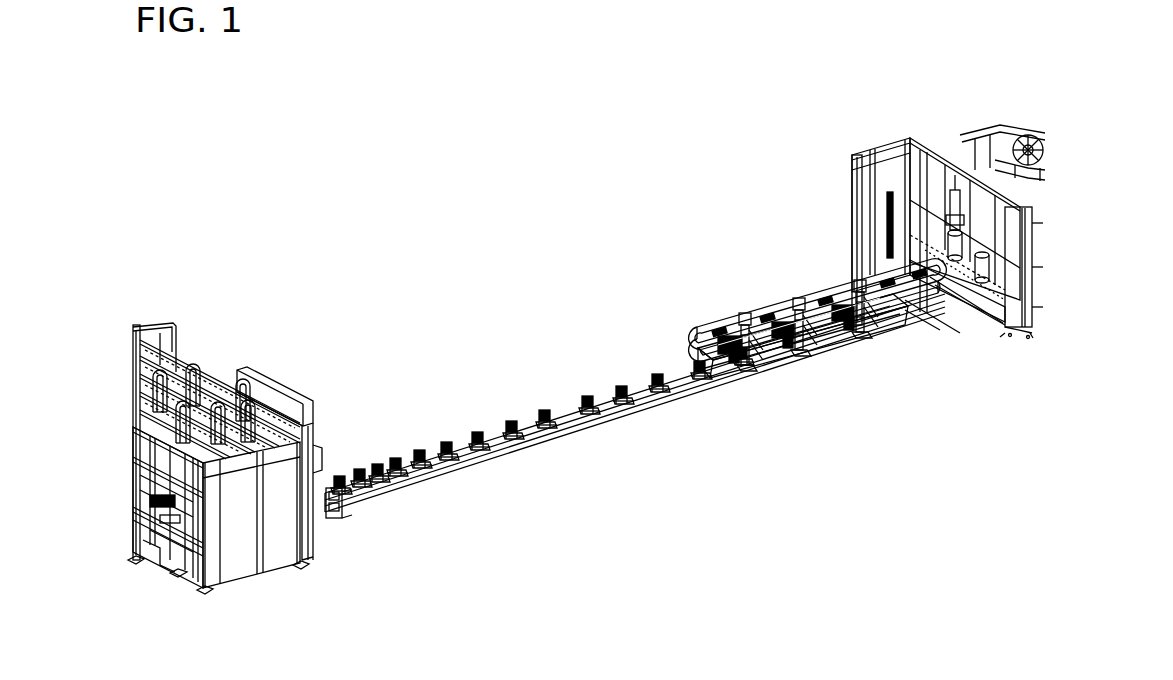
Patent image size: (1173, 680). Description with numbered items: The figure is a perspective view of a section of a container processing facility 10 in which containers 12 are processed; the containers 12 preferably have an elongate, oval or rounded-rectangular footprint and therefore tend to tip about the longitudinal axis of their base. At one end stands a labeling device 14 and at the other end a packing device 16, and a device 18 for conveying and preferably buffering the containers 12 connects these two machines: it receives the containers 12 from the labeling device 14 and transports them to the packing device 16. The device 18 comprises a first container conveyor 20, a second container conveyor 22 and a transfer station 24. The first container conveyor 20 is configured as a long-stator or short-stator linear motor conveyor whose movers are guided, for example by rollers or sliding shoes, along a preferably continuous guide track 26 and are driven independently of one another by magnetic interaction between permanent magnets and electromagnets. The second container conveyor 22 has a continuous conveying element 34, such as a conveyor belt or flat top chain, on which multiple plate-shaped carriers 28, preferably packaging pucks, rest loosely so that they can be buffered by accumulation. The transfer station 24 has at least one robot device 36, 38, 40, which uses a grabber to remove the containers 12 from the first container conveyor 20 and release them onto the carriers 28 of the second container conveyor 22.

The container processing facility 10 is at (604, 40).
The containers 12 is at (460, 425).
The labeling device 14 is at (903, 226).
The packing device 16 is at (275, 560).
The device for conveying and buffering 18 is at (541, 236).
The first container conveyor 20 is at (686, 318).
The second container conveyor 22 is at (660, 421).
The transfer station 24 is at (915, 322).
The guide track 26 is at (772, 303).
The carriers 28 is at (520, 440).
The conveying element 34 is at (467, 455).
The robot device 36 is at (880, 342).
The robot device 38 is at (826, 360).
The robot device 40 is at (770, 378).